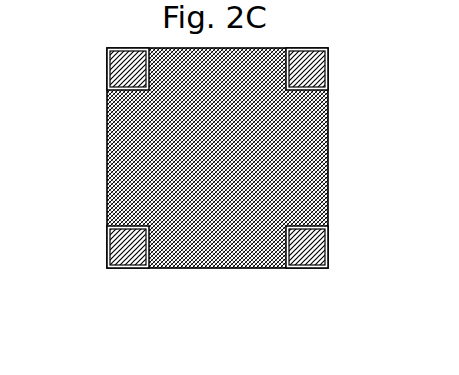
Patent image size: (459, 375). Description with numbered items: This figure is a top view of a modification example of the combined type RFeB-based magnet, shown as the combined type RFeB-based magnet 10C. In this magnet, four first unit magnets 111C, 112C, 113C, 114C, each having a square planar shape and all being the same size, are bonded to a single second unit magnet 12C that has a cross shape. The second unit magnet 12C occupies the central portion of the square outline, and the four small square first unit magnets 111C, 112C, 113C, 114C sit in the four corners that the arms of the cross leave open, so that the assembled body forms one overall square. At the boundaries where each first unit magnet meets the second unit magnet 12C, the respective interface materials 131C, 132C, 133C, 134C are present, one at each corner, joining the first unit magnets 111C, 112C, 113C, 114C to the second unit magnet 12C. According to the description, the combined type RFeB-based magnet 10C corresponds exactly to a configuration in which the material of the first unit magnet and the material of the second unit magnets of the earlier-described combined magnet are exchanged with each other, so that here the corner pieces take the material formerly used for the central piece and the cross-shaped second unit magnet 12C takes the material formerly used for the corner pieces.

The combined type RFeB-based magnet 10C is at (221, 188).
The second unit magnet 12C is at (312, 160).
The first unit magnet 111C is at (122, 70).
The first unit magnet 112C is at (312, 70).
The first unit magnet 113C is at (310, 250).
The first unit magnet 114C is at (122, 247).
The interface material 131C is at (109, 92).
The interface material 132C is at (328, 90).
The interface material 133C is at (328, 225).
The interface material 134C is at (109, 225).